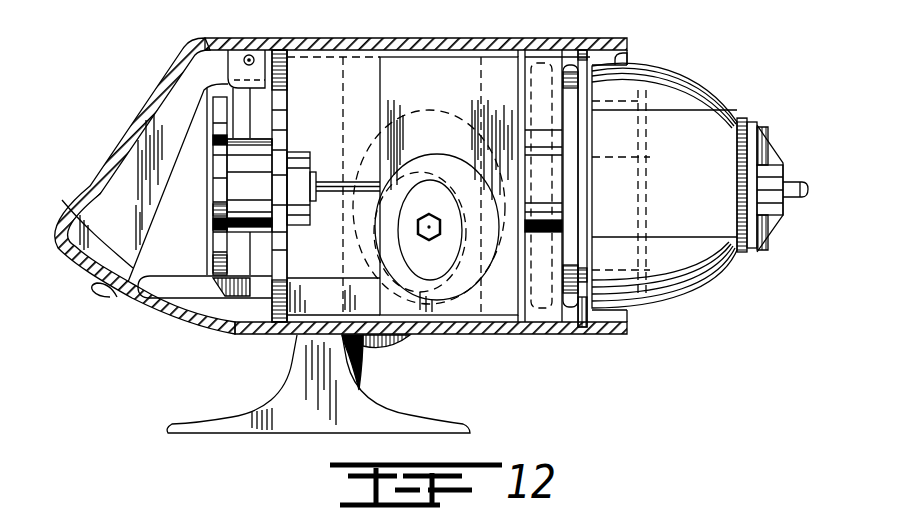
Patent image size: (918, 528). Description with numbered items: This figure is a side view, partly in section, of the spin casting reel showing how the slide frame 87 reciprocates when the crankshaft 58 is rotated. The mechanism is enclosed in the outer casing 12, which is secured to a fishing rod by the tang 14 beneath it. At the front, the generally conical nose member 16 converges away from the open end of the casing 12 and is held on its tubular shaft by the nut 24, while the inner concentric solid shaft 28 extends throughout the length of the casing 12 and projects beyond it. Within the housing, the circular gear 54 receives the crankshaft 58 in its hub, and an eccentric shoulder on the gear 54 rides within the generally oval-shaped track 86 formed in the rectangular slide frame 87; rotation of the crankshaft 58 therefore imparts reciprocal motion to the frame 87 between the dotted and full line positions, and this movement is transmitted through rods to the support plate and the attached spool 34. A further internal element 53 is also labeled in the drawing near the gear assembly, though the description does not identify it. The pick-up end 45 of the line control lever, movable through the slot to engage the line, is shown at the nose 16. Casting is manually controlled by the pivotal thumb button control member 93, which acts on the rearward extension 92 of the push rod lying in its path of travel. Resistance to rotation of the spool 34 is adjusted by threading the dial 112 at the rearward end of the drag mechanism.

The casing 12 is at (503, 42).
The tang 14 is at (277, 390).
The nose member 16 is at (693, 293).
The nut 24 is at (750, 160).
The solid shaft 28 is at (809, 189).
The spool 34 is at (648, 118).
The pick-up end 45 is at (626, 61).
The mounting plate 53 is at (272, 130).
The circular gear 54 is at (429, 205).
The crankshaft 58 is at (440, 237).
The oval-shaped track 86 is at (455, 257).
The slide frame 87 is at (430, 357).
The rearward extension 92 is at (196, 296).
The thumb button control member 93 is at (103, 152).
The dial 112 is at (213, 230).